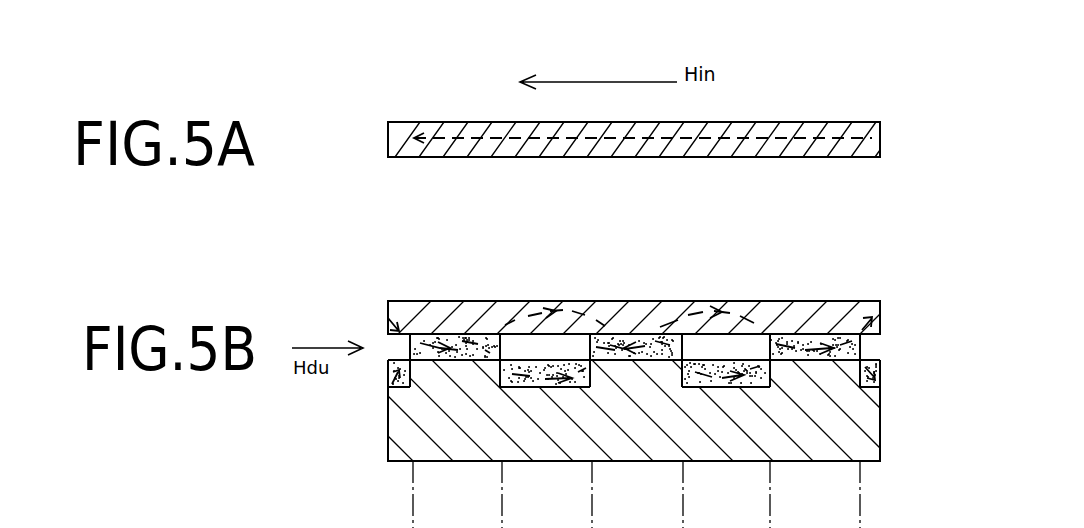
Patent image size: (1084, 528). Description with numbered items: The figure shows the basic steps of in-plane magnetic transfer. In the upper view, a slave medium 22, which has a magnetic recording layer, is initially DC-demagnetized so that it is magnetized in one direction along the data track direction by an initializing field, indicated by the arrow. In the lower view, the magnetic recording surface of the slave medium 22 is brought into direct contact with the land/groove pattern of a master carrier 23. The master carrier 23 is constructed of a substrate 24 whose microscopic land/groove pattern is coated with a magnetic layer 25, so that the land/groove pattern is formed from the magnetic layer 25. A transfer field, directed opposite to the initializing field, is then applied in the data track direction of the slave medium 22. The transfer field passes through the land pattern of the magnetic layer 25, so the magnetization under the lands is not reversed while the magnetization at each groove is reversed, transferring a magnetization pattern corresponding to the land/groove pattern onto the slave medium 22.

In FIG. 5A, the slave medium 22 is at (846, 122).
In FIG. 5B, the slave medium 22 is at (839, 303).
In FIG. 5B, the master carrier 23 is at (890, 422).
In FIG. 5B, the substrate 24 is at (626, 449).
In FIG. 5B, the magnetic layer 25 is at (650, 338).